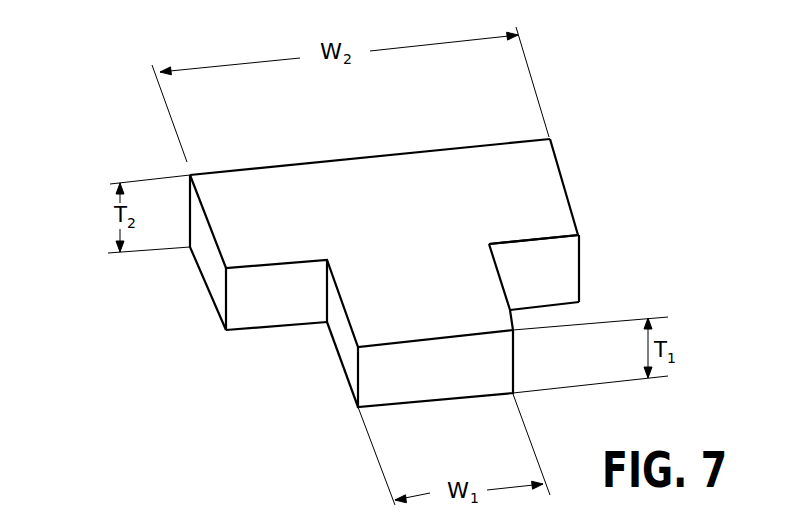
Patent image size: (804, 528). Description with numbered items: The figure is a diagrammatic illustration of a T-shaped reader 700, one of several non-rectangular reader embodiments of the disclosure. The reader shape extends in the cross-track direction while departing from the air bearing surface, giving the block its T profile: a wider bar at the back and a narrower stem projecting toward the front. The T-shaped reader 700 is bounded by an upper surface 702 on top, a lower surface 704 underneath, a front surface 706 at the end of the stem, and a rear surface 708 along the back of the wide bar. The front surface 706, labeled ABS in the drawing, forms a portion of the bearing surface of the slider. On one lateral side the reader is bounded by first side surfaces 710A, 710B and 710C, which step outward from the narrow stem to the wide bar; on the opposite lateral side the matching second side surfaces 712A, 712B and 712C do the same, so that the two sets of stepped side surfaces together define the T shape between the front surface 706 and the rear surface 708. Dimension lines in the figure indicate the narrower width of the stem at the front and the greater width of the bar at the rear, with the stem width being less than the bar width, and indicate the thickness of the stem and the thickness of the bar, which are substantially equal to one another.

The T-shaped reader 700 is at (105, 109).
The upper surface 702 is at (365, 195).
The lower surface 704 is at (272, 338).
The front surface 706 is at (387, 392).
The rear surface 708 is at (247, 169).
The first side surface 710A is at (350, 353).
The first side surface 710B is at (250, 285).
The first side surface 710C is at (207, 260).
The second side surface 712A is at (510, 318).
The second side surface 712B is at (537, 273).
The second side surface 712C is at (580, 250).